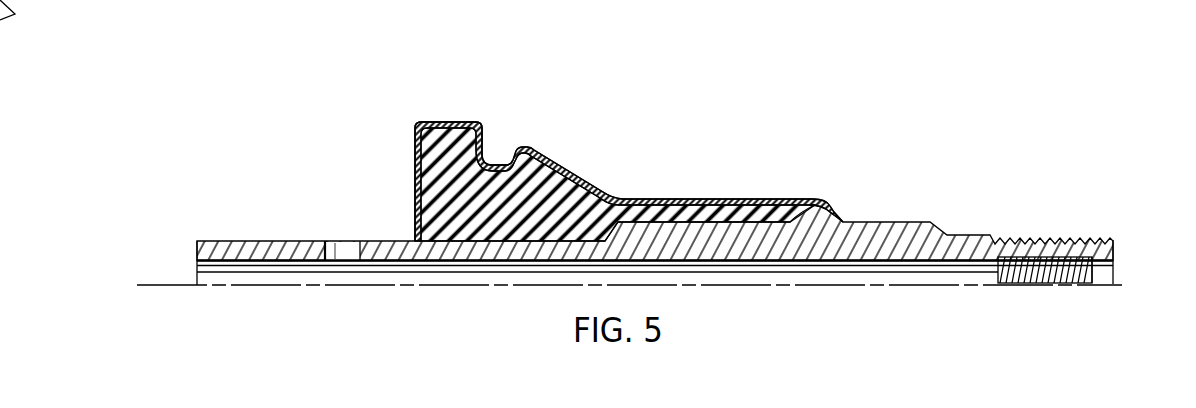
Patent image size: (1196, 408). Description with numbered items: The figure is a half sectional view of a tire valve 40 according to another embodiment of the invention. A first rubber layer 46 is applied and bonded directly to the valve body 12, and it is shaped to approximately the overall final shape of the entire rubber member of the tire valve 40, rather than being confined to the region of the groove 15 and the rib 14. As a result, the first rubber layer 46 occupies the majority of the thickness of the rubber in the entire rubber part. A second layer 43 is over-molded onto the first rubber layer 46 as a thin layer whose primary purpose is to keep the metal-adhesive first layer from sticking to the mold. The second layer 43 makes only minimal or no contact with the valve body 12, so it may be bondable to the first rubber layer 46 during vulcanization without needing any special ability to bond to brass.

The valve body 12 is at (908, 222).
The rib 14 is at (522, 148).
The groove 15 is at (496, 160).
The tire valve 40 is at (830, 136).
The second layer 43 is at (450, 122).
The first rubber layer 46 is at (581, 192).